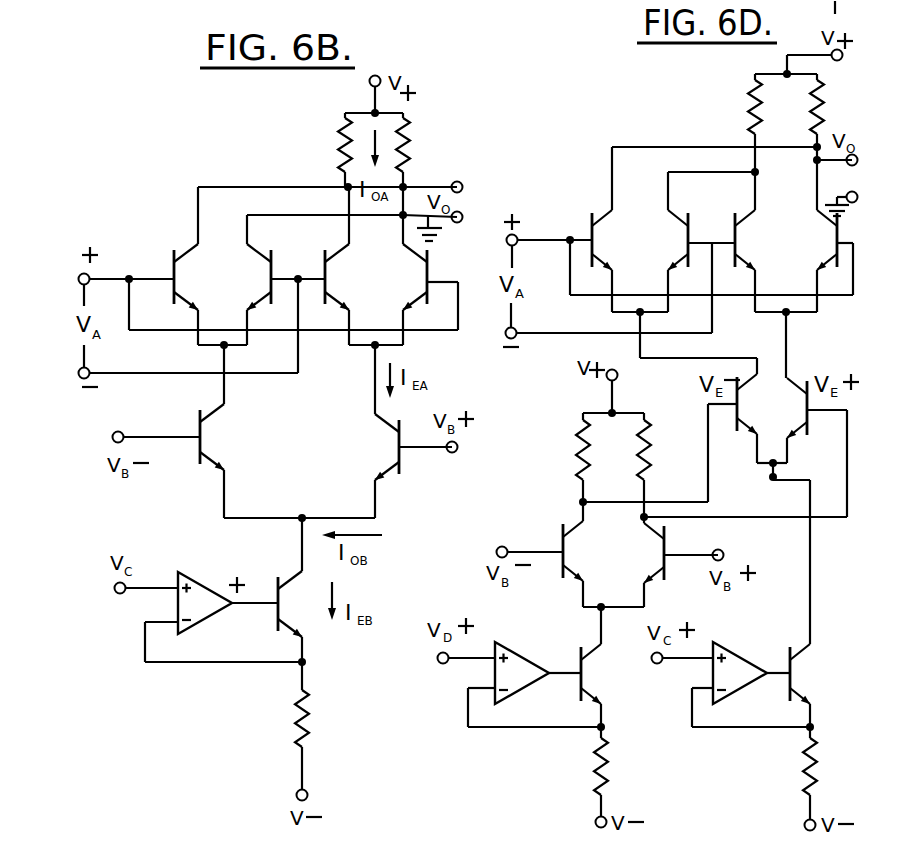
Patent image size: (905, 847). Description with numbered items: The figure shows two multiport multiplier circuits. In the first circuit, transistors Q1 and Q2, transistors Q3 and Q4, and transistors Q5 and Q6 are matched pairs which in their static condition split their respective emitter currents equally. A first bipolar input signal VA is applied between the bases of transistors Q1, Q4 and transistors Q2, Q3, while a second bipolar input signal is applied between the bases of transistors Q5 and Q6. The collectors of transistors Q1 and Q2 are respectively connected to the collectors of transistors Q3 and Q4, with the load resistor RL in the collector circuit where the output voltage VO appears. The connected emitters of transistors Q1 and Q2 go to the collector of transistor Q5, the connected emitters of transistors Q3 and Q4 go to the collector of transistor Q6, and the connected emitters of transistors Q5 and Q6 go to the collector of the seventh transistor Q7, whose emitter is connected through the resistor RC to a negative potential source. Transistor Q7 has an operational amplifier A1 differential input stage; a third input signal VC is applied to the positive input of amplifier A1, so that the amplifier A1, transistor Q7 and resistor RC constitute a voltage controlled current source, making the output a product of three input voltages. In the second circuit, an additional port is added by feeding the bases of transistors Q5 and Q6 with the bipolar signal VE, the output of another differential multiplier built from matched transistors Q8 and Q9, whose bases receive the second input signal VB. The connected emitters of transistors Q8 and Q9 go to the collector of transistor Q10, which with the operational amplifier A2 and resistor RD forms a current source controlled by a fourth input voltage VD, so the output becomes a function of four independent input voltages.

In FIG. 6B, the transistor Q1 is at (190, 277).
In FIG. 6D, the transistor Q1 is at (608, 240).
In FIG. 6B, the transistor Q2 is at (254, 277).
In FIG. 6D, the transistor Q2 is at (672, 240).
In FIG. 6B, the transistor Q3 is at (341, 277).
In FIG. 6D, the transistor Q3 is at (751, 240).
In FIG. 6B, the transistor Q4 is at (409, 277).
In FIG. 6D, the transistor Q4 is at (821, 240).
In FIG. 6B, the transistor Q5 is at (221, 437).
In FIG. 6D, the transistor Q5 is at (752, 404).
In FIG. 6B, the transistor Q6 is at (377, 447).
In FIG. 6D, the transistor Q6 is at (793, 408).
In FIG. 6B, the seventh transistor Q7 is at (297, 604).
In FIG. 6D, the seventh transistor Q7 is at (811, 674).
In FIG. 6D, the transistor Q8 is at (579, 551).
In FIG. 6D, the transistor Q9 is at (647, 553).
In FIG. 6D, the transistor Q10 is at (600, 674).
In FIG. 6B, the operational amplifier A1 is at (205, 603).
In FIG. 6D, the operational amplifier A1 is at (740, 673).
In FIG. 6D, the operational amplifier A2 is at (522, 673).
In FIG. 6B, the load resistor RL is at (422, 150).
In FIG. 6B, the resistor RC is at (321, 726).
In FIG. 6D, the resistor RC is at (828, 773).
In FIG. 6D, the resistor RD is at (619, 772).